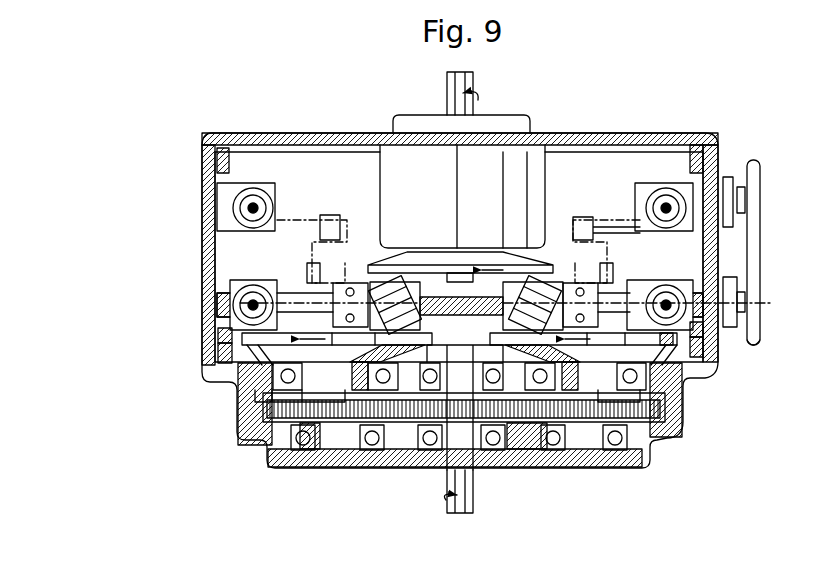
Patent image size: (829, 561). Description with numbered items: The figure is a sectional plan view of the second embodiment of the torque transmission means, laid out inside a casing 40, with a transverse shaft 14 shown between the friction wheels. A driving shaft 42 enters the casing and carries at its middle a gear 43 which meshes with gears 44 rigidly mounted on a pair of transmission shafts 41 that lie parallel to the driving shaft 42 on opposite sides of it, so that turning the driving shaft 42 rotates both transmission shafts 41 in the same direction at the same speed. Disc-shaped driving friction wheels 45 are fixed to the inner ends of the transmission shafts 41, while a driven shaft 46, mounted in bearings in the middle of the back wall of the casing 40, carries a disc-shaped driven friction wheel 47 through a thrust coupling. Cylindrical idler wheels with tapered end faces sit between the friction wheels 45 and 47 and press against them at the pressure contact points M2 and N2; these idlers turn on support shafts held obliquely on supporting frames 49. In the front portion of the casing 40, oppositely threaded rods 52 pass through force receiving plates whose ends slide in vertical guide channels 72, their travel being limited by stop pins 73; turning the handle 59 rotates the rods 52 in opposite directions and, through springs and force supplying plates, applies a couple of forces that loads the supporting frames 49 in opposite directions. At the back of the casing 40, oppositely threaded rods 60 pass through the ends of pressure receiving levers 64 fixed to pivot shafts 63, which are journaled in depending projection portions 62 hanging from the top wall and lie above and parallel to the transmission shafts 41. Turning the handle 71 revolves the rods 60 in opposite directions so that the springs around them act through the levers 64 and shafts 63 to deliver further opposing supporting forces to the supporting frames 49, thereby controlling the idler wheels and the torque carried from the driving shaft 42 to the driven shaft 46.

The transverse shaft 14 is at (440, 298).
The casing 40 is at (202, 193).
The transmission shafts 41 is at (322, 455).
The driving shaft 42 is at (474, 508).
The gear 43 is at (462, 415).
The gears 44 is at (262, 420).
The driving friction wheels 45 is at (252, 365).
The driven shaft 46 is at (475, 88).
The driven friction wheel 47 is at (368, 262).
The supporting frames 49 is at (247, 342).
The threaded rods 52 is at (217, 298).
The handle 59 is at (757, 340).
The threaded rods 60 is at (253, 207).
The depending projection portions 62 is at (312, 258).
The pivot shafts 63 is at (337, 238).
The pressure receiving levers 64 is at (290, 210).
The handle 71 is at (748, 165).
The vertical guide channels 72 is at (216, 330).
The stop pins 73 is at (216, 305).
The pressure contact point N2 is at (515, 268).
The pressure contact point M2 is at (395, 325).